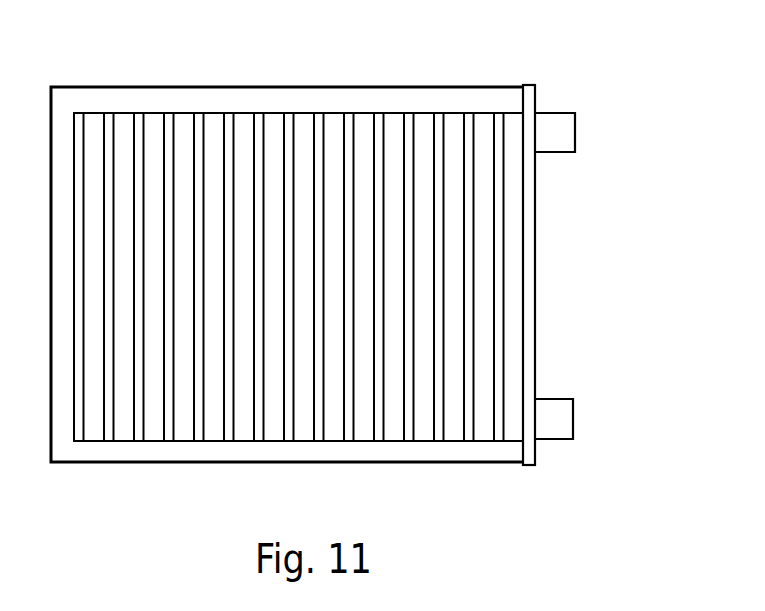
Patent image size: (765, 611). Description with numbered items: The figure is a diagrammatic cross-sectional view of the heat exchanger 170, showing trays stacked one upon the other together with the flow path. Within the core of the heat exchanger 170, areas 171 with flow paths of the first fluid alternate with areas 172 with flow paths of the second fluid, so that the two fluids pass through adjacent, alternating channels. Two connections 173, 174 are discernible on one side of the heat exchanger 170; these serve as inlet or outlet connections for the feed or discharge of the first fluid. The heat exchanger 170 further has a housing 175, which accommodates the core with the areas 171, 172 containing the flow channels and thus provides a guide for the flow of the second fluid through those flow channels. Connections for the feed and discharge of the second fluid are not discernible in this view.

The heat exchanger 170 is at (357, 270).
The areas with flow paths of the first fluid 171 is at (213, 134).
The areas with flow paths of the second fluid 172 is at (125, 135).
The connection 173 is at (562, 132).
The connection 174 is at (553, 417).
The housing 175 is at (192, 462).